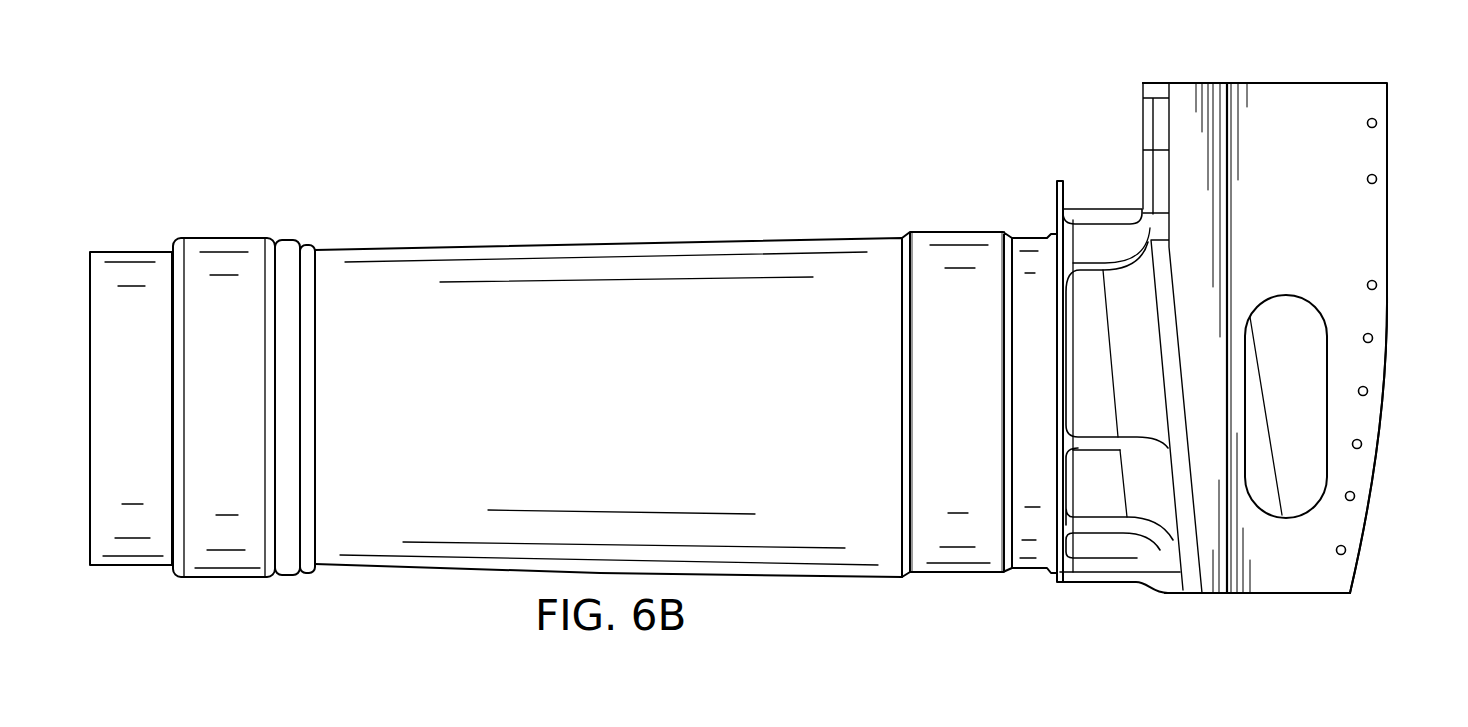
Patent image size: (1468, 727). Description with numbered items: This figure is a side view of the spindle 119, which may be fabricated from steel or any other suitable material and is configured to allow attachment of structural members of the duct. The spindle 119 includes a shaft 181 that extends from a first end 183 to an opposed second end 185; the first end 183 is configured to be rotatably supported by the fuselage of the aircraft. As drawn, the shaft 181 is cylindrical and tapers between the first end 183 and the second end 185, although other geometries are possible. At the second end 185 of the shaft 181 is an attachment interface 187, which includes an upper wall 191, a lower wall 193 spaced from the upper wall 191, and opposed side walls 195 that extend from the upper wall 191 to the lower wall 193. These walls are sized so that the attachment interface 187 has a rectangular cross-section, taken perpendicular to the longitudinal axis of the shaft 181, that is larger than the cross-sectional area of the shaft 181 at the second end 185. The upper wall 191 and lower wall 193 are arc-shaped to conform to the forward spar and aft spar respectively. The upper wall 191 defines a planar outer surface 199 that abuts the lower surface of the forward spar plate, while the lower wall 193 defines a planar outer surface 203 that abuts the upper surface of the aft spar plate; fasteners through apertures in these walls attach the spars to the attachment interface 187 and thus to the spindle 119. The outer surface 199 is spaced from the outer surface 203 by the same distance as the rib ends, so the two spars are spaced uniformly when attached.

The spindle 119 is at (583, 76).
The shaft 181 is at (596, 246).
The first end 183 is at (127, 566).
The second end 185 is at (1093, 582).
The attachment interface 187 is at (1370, 482).
The upper wall 191 is at (1298, 83).
The lower wall 193 is at (1332, 594).
The side walls 195 is at (1378, 228).
The outer surface 199 is at (1185, 83).
The outer surface 203 is at (1258, 594).